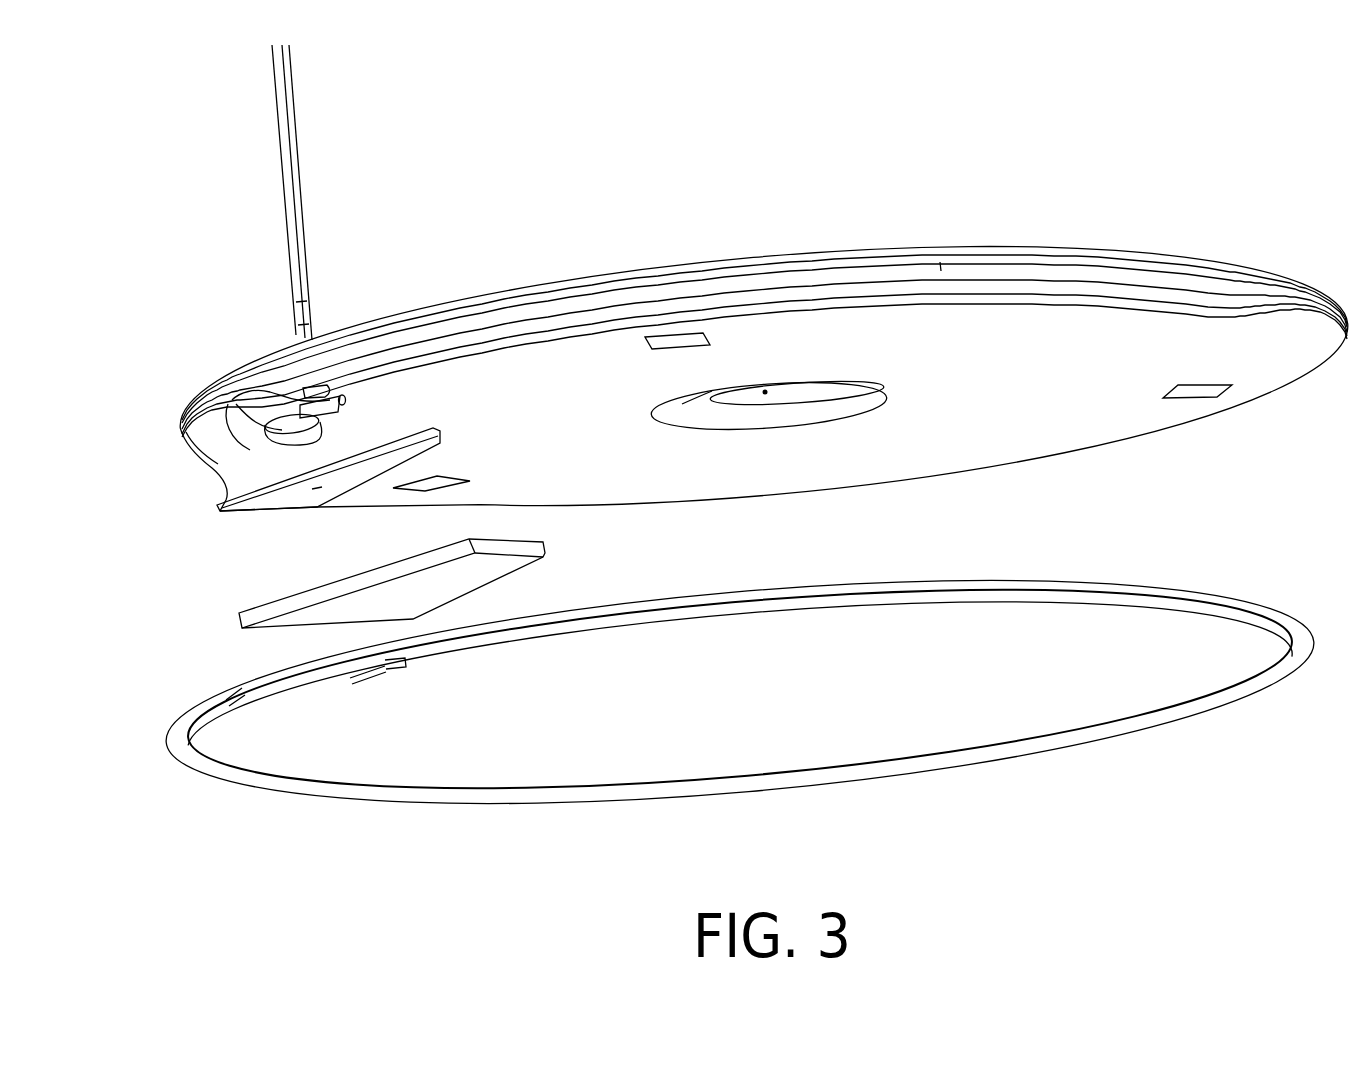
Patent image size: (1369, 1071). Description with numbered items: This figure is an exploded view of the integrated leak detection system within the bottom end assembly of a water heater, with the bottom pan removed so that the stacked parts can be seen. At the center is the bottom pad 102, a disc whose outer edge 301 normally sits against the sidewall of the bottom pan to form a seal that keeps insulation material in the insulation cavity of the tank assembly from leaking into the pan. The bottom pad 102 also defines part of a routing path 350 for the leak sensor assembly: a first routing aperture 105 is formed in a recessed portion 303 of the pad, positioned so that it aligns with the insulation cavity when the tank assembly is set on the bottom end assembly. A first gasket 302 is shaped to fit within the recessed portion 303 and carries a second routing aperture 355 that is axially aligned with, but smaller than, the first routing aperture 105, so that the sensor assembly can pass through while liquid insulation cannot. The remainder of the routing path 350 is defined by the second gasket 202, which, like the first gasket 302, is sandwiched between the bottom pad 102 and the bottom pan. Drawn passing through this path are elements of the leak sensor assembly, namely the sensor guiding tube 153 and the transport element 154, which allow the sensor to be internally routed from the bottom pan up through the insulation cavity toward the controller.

The bottom pad 102 is at (1099, 250).
The outer edge 301 is at (1325, 303).
The first routing aperture 105 is at (318, 385).
The recessed portion 303 is at (268, 390).
The sensor guiding tube 153 is at (300, 412).
The second routing aperture 355 is at (318, 490).
The first gasket 302 is at (248, 488).
The second gasket 202 is at (497, 569).
The routing path 350 is at (287, 552).
The transport element 154 is at (1102, 733).